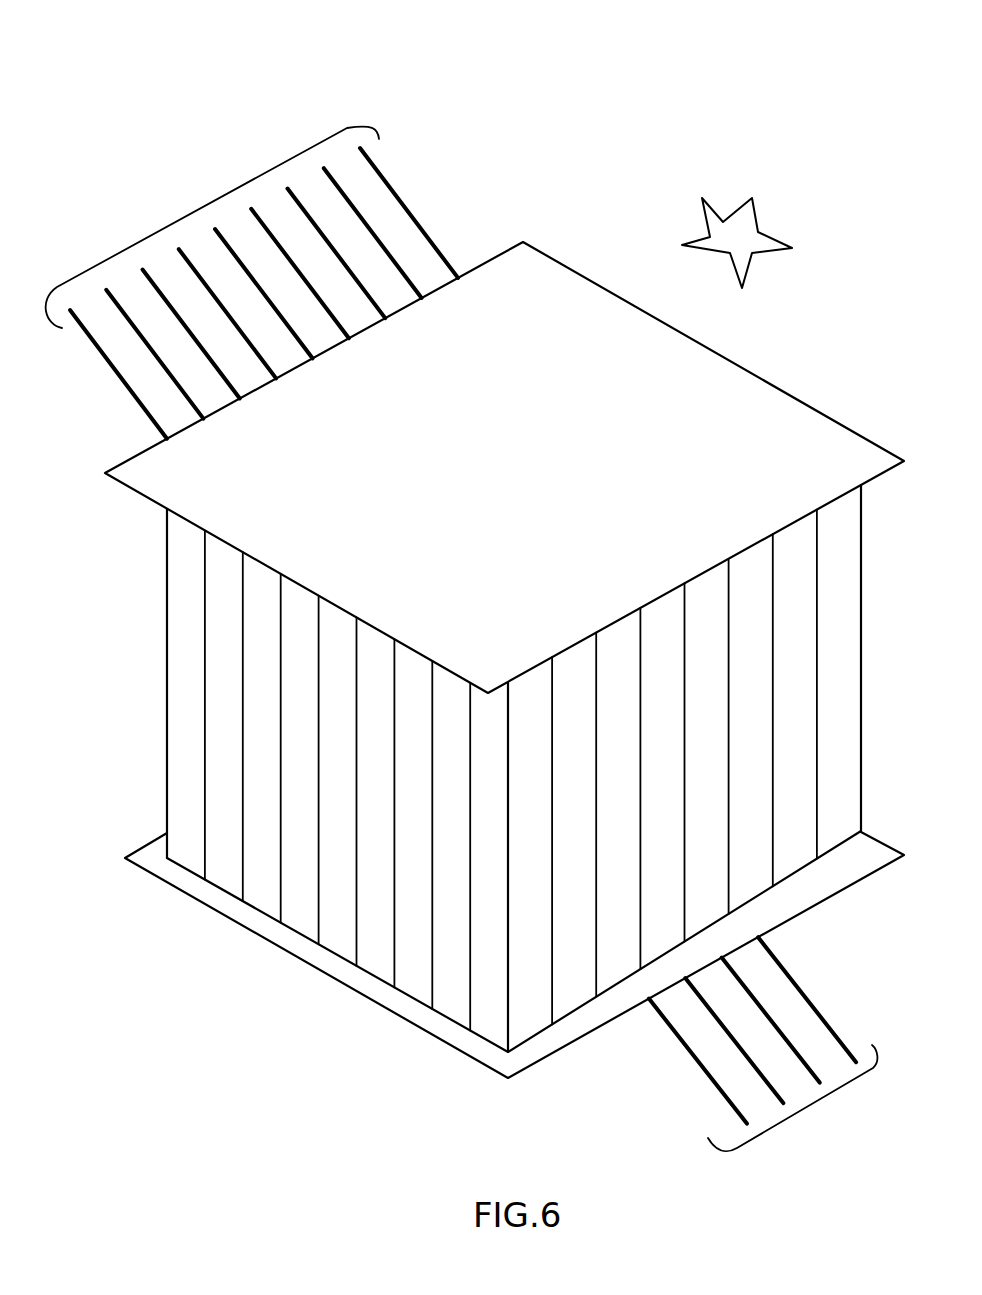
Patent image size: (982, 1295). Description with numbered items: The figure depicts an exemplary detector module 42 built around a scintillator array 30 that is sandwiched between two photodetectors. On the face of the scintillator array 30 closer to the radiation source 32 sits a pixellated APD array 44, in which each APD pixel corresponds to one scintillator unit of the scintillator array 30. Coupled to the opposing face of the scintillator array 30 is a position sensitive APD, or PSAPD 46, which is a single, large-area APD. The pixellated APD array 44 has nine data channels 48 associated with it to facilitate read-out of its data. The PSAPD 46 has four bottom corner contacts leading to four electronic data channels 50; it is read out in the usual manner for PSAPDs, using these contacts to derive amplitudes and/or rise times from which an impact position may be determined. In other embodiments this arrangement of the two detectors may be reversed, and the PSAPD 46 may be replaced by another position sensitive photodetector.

The scintillator array 30 is at (862, 643).
The radiation source 32 is at (762, 232).
The detector module 42 is at (815, 70).
The pixellated APD array 44 is at (758, 386).
The position sensitive APD (PSAPD) 46 is at (851, 870).
The data channels 48 is at (194, 213).
The electronic data channels 50 is at (814, 1105).